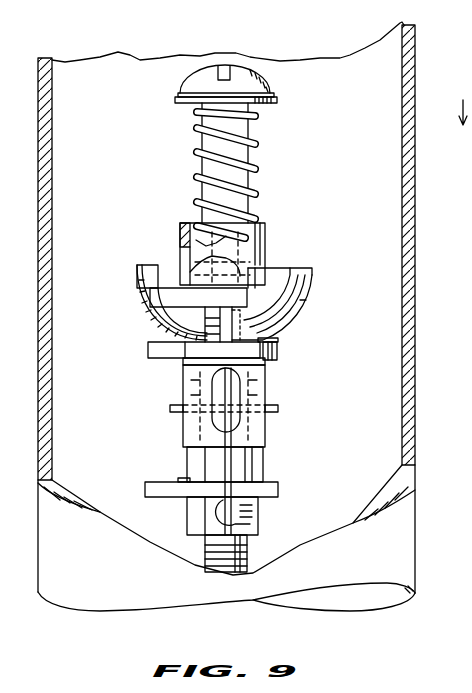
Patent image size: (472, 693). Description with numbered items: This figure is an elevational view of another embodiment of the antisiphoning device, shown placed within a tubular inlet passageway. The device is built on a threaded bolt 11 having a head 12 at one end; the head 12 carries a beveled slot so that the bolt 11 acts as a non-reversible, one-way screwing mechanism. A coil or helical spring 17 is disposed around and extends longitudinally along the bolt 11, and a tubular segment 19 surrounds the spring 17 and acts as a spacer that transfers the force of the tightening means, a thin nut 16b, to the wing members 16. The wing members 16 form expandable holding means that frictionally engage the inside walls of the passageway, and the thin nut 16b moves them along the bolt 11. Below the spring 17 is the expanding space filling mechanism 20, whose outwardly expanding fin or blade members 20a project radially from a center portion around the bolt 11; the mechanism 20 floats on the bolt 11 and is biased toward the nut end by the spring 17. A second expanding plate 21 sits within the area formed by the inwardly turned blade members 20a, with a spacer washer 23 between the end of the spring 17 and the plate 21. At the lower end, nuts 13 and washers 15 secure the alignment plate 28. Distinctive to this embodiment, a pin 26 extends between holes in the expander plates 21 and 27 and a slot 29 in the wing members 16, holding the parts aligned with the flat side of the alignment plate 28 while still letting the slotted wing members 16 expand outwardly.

The bolt 11 is at (240, 186).
The head 12 is at (258, 88).
The nuts 13 is at (259, 457).
The washers 15 is at (180, 482).
The wing members 16 is at (266, 381).
The thin nut 16b is at (279, 408).
The coil or helical spring 17 is at (253, 148).
The tubular segment 19 is at (262, 225).
The space filling mechanism 20 is at (318, 262).
The fin or blade members 20a is at (301, 302).
The second expanding plate 21 is at (160, 297).
The spacer washer 23 is at (190, 286).
The pin 26 is at (276, 341).
The expander plate 27 is at (279, 352).
The alignment plate 28 is at (279, 488).
The slot 29 is at (236, 418).